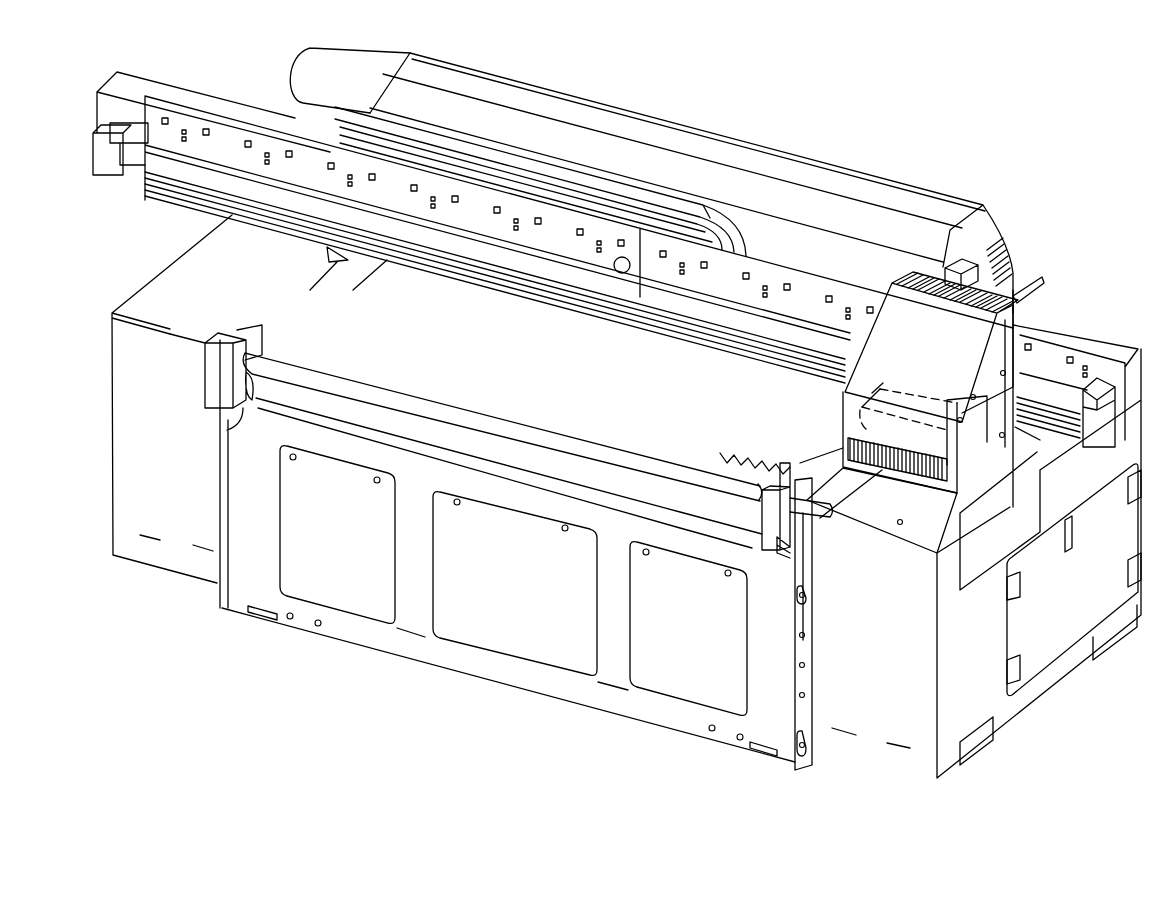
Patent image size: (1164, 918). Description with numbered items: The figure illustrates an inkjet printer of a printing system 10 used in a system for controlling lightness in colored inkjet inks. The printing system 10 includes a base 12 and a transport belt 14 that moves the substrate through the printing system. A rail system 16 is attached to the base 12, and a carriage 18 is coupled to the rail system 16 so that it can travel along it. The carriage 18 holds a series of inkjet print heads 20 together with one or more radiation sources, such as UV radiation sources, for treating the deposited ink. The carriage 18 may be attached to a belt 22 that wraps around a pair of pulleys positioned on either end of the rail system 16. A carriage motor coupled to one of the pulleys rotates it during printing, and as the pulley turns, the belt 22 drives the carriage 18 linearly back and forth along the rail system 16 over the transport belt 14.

The printing system 10 is at (301, 667).
The base 12 is at (188, 281).
The transport belt 14 is at (479, 350).
The rail system 16 is at (264, 127).
The carriage 18 is at (940, 354).
The inkjet print heads 20 is at (878, 432).
The belt 22 is at (621, 276).